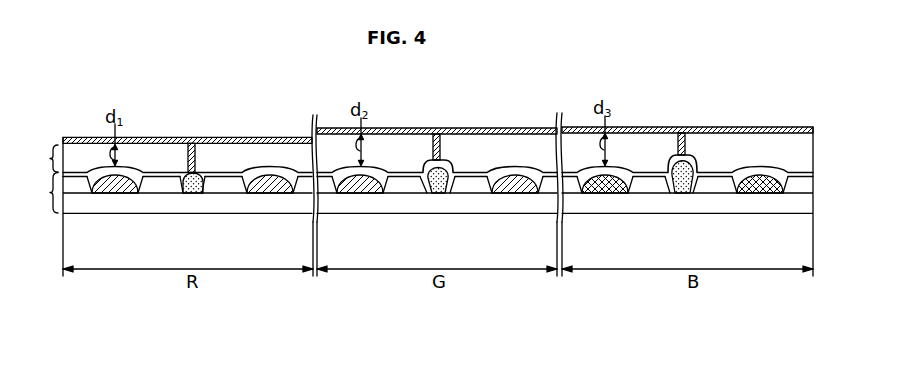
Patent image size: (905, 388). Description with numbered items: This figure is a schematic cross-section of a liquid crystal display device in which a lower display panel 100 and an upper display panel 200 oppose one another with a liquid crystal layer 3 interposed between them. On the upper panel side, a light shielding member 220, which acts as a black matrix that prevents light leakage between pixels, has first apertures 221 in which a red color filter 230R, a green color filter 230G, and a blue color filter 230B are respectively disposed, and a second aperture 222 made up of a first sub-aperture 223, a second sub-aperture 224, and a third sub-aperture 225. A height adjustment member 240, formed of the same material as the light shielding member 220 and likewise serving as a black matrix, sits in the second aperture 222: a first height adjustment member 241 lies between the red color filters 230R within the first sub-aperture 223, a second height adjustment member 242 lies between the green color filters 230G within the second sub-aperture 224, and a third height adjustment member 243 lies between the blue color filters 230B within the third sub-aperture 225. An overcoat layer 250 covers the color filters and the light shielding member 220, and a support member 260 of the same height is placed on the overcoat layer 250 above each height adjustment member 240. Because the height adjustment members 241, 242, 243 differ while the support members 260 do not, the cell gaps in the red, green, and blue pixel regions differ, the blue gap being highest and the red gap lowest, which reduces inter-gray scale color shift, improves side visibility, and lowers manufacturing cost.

The lower display panel 100 is at (67, 139).
The liquid crystal layer 3 is at (48, 158).
The upper display panel 200 is at (411, 170).
The light shielding member 220 is at (162, 187).
The first aperture 221 is at (136, 190).
The second aperture 222 is at (810, 366).
The first sub-aperture 223 is at (196, 191).
The second sub-aperture 224 is at (443, 191).
The third sub-aperture 225 is at (688, 191).
The red color filter 230R is at (110, 190).
The green color filter 230G is at (355, 190).
The blue color filter 230B is at (600, 190).
The height adjustment member 240 is at (810, 338).
The first height adjustment member 241 is at (190, 195).
The second height adjustment member 242 is at (436, 195).
The third height adjustment member 243 is at (681, 195).
The overcoat layer 250 is at (268, 166).
The support member 260 is at (191, 143).